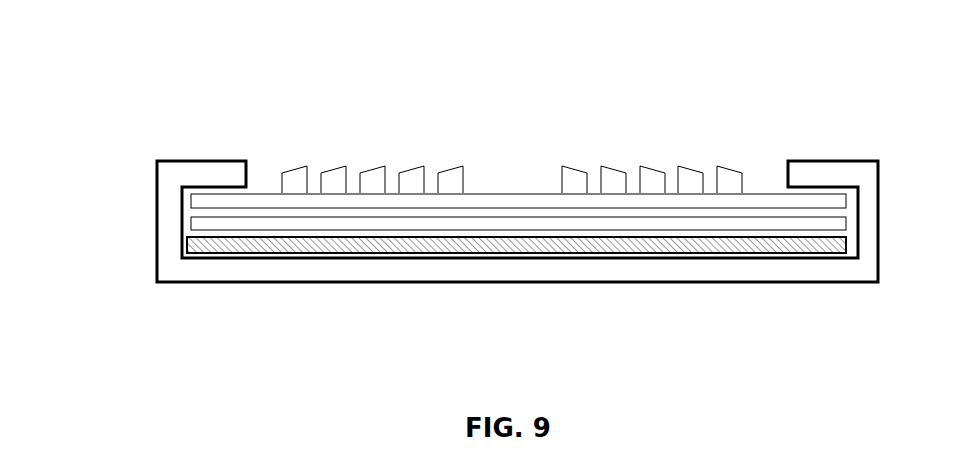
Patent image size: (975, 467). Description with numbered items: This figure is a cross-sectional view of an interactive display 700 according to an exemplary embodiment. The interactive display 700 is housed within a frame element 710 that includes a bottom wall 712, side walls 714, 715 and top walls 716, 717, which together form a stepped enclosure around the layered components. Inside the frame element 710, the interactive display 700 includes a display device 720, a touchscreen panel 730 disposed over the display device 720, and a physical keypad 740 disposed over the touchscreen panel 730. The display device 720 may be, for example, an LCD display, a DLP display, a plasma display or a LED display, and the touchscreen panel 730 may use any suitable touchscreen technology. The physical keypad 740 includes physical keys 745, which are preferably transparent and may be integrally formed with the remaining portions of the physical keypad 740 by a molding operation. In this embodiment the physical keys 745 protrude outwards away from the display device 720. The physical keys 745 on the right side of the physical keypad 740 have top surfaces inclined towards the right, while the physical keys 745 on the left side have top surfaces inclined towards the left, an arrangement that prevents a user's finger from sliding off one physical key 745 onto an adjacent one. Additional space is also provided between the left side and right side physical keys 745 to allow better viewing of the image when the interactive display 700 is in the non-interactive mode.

The interactive display 700 is at (128, 90).
The frame element 710 is at (155, 210).
The bottom wall 712 is at (370, 265).
The side wall 714 is at (168, 244).
The side wall 715 is at (867, 227).
The top wall 716 is at (195, 169).
The top wall 717 is at (832, 173).
The display device 720 is at (752, 249).
The touchscreen panel 730 is at (641, 221).
The physical keypad 740 is at (752, 200).
The physical key 745 is at (410, 166).